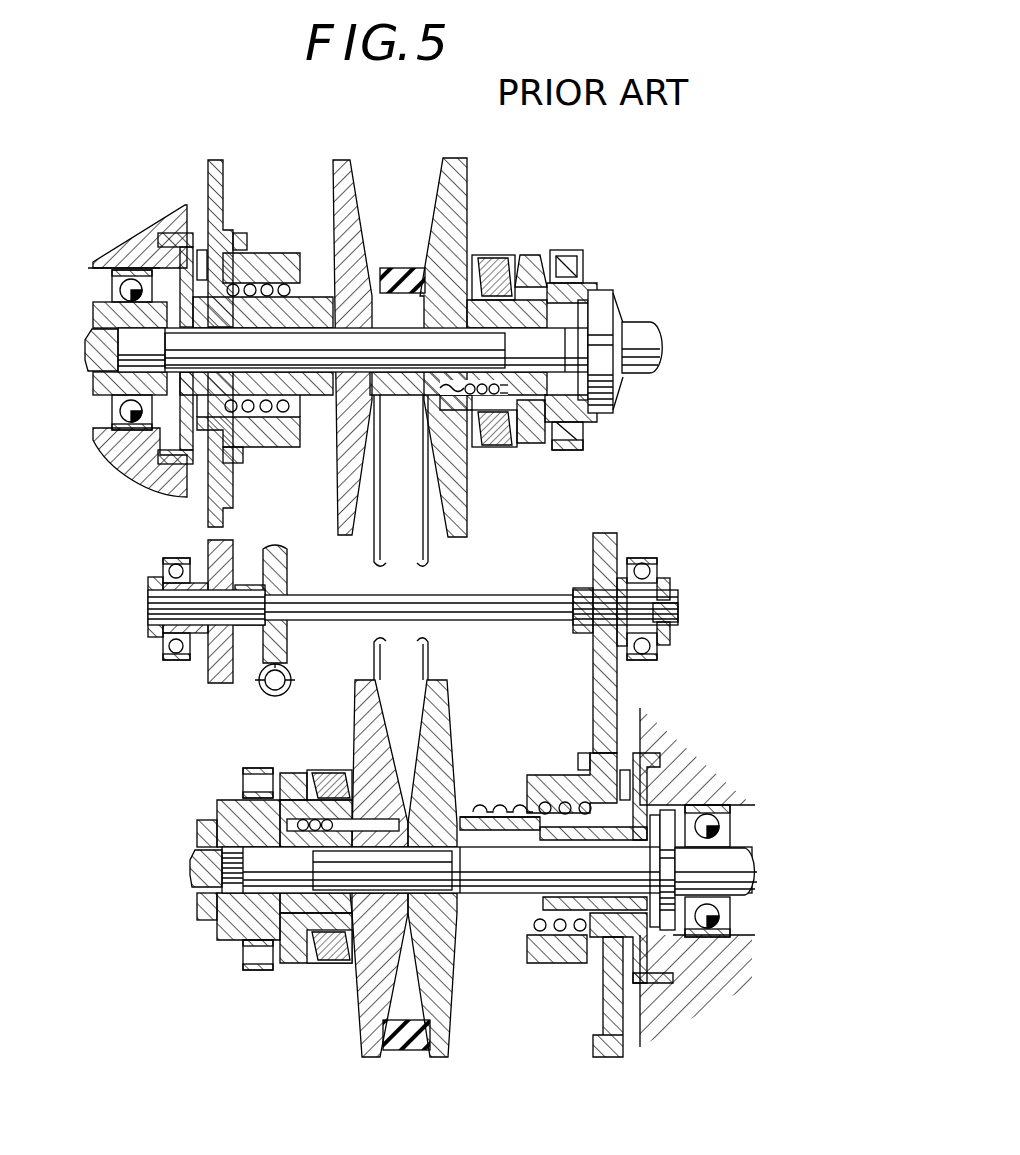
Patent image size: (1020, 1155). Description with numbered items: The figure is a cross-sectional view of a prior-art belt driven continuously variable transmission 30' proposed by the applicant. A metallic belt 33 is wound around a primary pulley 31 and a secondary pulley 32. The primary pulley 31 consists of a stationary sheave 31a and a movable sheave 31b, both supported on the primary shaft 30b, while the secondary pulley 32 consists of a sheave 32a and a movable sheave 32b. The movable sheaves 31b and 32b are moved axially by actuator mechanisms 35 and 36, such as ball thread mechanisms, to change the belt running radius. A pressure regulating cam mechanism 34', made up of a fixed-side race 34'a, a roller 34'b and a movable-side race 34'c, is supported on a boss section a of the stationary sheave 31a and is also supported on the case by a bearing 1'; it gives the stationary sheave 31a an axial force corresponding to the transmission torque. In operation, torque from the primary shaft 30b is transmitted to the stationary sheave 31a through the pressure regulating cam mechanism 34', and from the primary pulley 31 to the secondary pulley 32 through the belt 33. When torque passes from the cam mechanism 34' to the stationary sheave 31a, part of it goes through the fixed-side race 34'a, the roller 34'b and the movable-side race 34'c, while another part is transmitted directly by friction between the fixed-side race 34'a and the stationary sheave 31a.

The belt driven continuously variable transmission 30' is at (167, 384).
The primary pulley 31 is at (402, 327).
The stationary sheave 31a is at (470, 178).
The movable sheave 31b is at (340, 178).
The actuator mechanism 35 is at (265, 250).
The pressure regulating cam mechanism 34' is at (530, 350).
The fixed-side race 34'a is at (552, 247).
The roller 34'b is at (496, 254).
The movable-side race 34'c is at (501, 463).
The bearing 1' is at (584, 329).
The primary shaft 30b is at (560, 352).
The boss section a is at (528, 407).
The secondary pulley 32 is at (406, 875).
The sheave of the secondary pulley 32a is at (362, 1017).
The movable sheave 32b is at (448, 1022).
The metallic belt 33 is at (413, 1049).
The actuator mechanism 36 is at (530, 773).